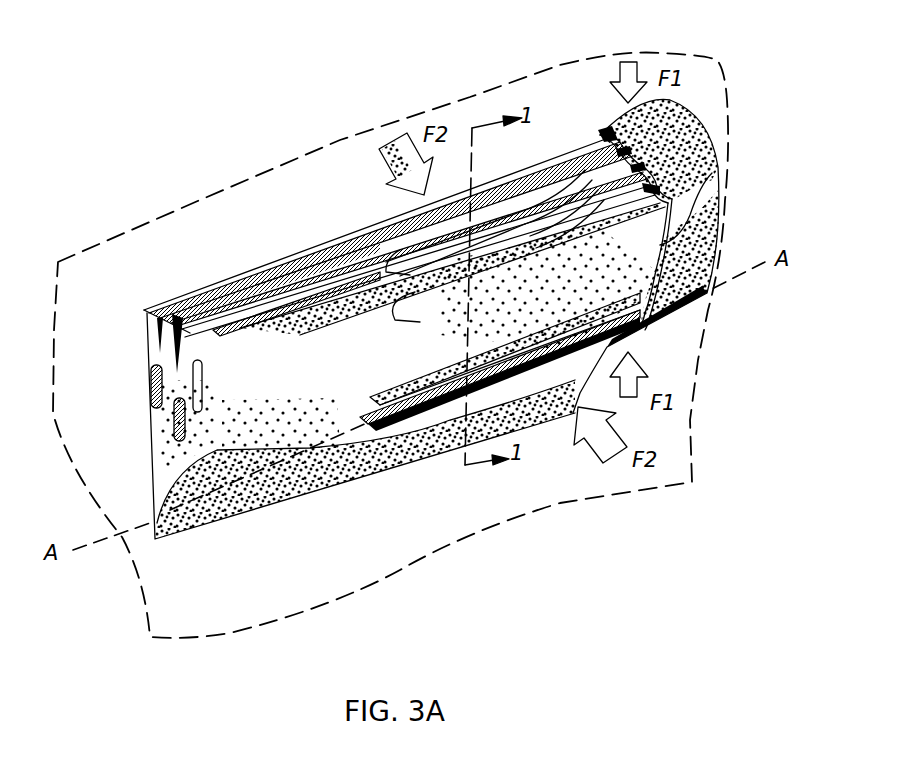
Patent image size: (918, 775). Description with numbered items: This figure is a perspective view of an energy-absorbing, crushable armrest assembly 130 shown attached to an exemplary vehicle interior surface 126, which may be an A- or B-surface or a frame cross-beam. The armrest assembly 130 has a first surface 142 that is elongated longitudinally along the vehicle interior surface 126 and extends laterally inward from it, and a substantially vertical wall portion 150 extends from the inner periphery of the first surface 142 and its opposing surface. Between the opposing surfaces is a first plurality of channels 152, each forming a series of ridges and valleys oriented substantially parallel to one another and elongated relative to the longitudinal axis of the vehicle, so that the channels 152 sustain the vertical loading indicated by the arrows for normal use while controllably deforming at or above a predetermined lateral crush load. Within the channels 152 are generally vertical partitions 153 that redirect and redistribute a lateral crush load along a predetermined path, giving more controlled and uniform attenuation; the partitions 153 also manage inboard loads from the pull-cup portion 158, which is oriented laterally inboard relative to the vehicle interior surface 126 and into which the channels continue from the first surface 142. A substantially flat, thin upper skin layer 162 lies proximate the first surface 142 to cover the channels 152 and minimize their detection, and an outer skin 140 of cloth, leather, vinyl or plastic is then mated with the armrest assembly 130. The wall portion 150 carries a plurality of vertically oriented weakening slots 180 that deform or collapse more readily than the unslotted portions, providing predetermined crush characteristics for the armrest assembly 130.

The vehicle interior surface 126 is at (171, 237).
The crushable armrest assembly 130 is at (350, 170).
The outer skin 140 is at (683, 137).
The first surface 142 is at (340, 240).
The substantially vertical wall portion 150 is at (648, 232).
The first plurality of channels 152 is at (288, 241).
The vertical partitions 153 is at (420, 300).
The pull-cup portion 158 is at (507, 210).
The upper skin layer 162 is at (668, 200).
The weakening slots 180 is at (183, 398).